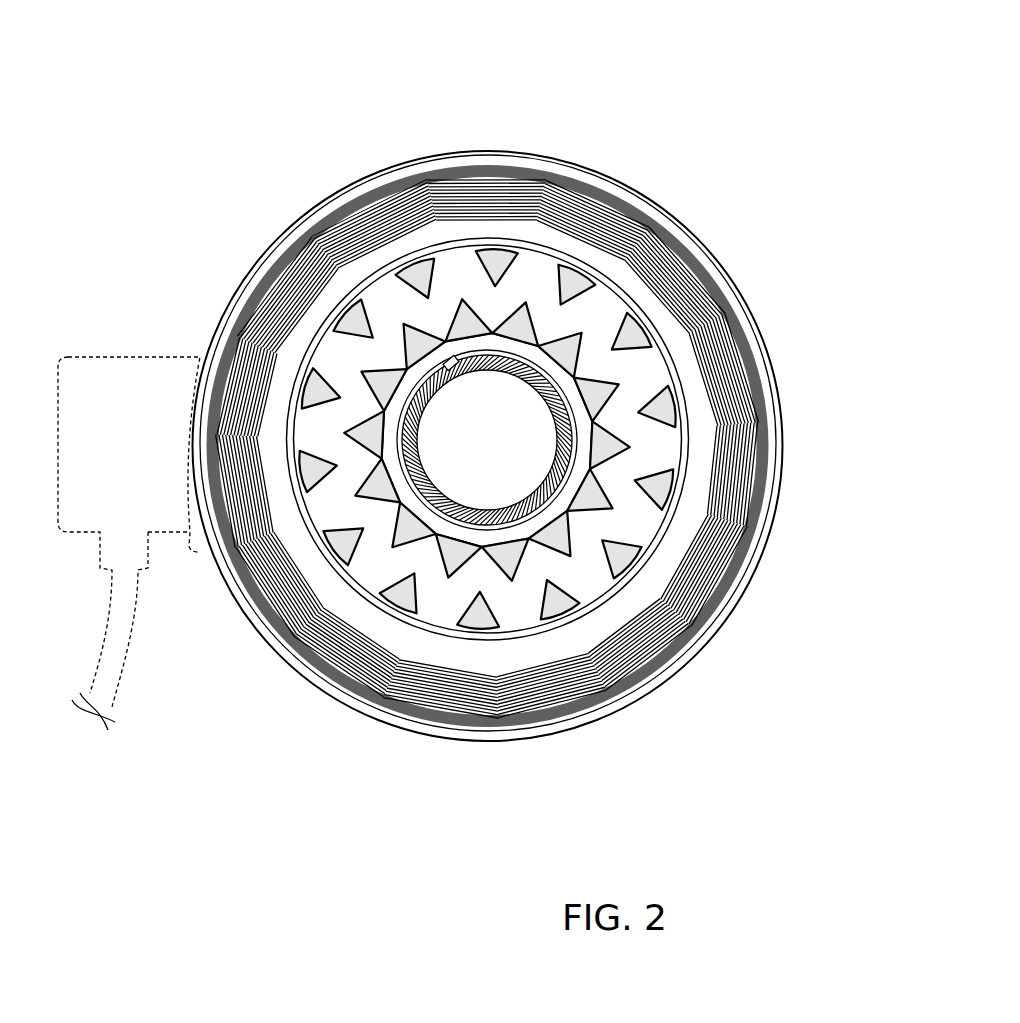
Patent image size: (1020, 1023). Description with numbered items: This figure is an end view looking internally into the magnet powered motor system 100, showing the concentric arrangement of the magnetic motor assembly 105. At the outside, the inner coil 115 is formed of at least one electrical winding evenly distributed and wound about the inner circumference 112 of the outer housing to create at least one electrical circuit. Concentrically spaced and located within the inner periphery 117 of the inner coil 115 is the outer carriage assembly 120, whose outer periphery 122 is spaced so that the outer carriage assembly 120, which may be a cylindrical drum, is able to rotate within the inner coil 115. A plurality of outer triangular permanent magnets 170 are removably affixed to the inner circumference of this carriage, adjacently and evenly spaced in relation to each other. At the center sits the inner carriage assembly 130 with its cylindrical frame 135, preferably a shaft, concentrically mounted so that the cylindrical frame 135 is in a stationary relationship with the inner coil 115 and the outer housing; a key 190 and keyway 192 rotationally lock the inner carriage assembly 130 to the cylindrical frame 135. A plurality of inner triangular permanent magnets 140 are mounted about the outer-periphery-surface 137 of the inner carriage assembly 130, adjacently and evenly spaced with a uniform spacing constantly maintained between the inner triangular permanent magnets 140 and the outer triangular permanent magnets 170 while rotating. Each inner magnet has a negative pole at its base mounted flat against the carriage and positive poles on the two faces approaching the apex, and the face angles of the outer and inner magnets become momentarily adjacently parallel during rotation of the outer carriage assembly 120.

The magnet powered motor system 100 is at (630, 68).
The magnetic motor assembly 105 is at (409, 156).
The inner circumference 112 is at (344, 211).
The inner coil 115 is at (680, 287).
The inner periphery 117 is at (768, 427).
The outer carriage assembly 120 is at (586, 258).
The outer periphery 122 is at (568, 249).
The inner carriage assembly 130 is at (383, 494).
The cylindrical frame 135 is at (441, 487).
The outer-periphery-surface 137 is at (425, 545).
The inner triangular permanent magnets 140 is at (584, 529).
The outer triangular permanent magnets 170 is at (590, 566).
The key 190 is at (440, 377).
The keyway 192 is at (481, 372).